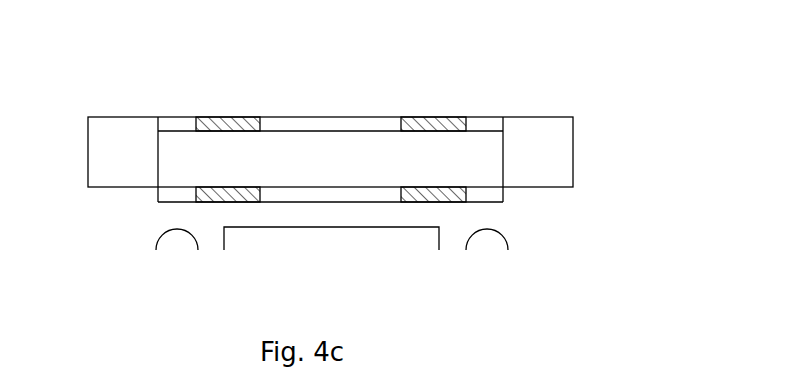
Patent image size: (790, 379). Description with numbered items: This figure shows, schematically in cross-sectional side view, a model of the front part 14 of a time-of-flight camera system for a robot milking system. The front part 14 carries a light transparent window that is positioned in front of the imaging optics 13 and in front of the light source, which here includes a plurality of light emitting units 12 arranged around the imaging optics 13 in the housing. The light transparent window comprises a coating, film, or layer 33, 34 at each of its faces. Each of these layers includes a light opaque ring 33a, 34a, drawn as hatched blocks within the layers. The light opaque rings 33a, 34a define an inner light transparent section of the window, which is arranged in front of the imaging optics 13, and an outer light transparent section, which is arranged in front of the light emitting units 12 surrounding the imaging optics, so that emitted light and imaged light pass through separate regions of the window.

The light emitting units 12 is at (157, 244).
The imaging optics 13 is at (440, 237).
The front part 14 is at (573, 157).
The coating, film, or layer 33 is at (336, 117).
The light opaque ring 33a is at (225, 117).
The coating, film, or layer 34 is at (492, 202).
The light opaque ring 34a is at (434, 202).